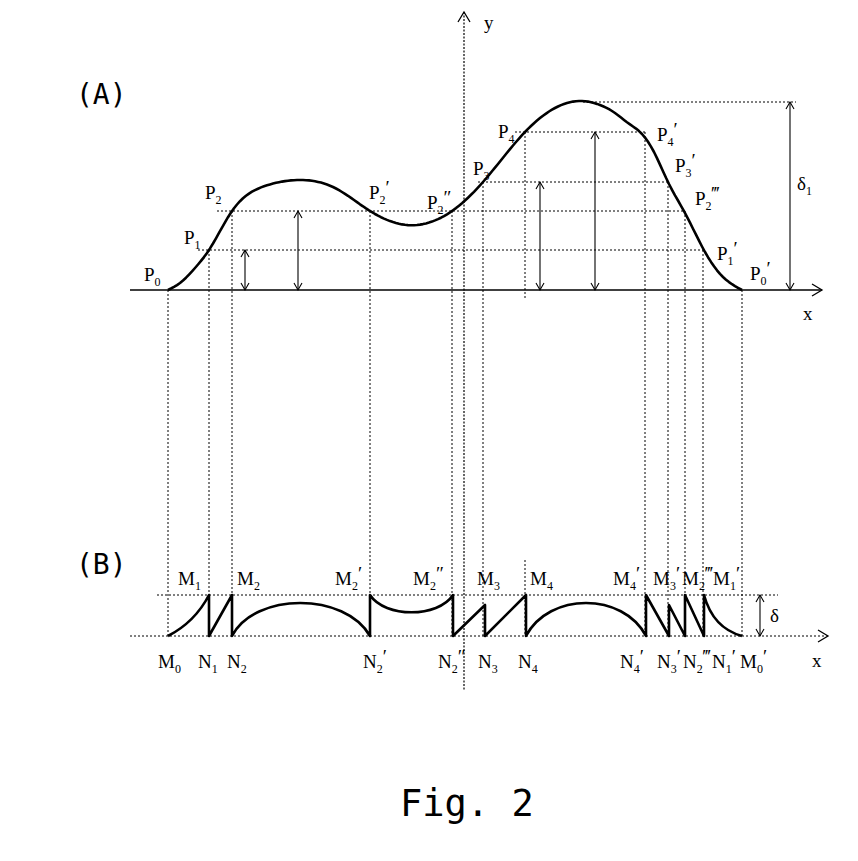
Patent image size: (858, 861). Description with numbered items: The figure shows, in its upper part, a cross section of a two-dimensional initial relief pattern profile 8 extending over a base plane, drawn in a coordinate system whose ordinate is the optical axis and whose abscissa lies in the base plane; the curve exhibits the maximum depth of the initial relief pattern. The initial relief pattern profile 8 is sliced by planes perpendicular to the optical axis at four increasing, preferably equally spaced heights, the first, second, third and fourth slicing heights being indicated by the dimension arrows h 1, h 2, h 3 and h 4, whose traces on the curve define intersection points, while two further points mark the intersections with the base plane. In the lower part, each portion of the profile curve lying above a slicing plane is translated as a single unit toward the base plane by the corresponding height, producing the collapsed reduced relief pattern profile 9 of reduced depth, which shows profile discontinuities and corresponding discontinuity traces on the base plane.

The initial relief pattern profile 8 is at (560, 100).
The reduced relief pattern profile 9 is at (293, 600).
The height h1 of the profile at point P1 1 is at (257, 270).
The height h2 of the profile at the first peak 2 is at (306, 250).
The height h3 of the profile at point P3 3 is at (549, 236).
The height h4 of the profile at point P4 4 is at (602, 211).